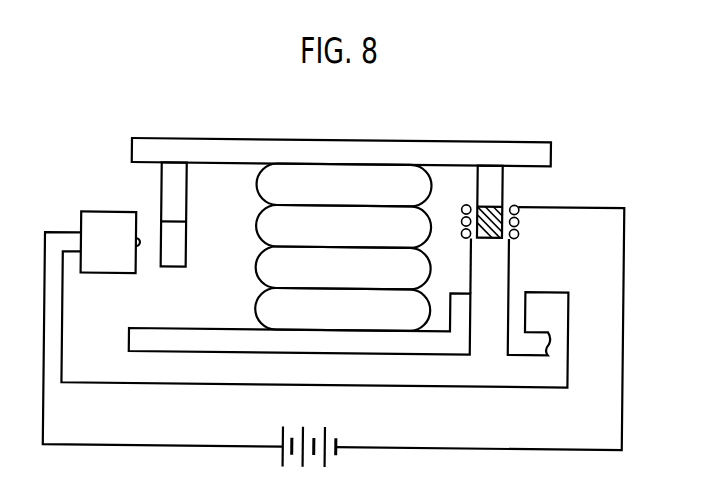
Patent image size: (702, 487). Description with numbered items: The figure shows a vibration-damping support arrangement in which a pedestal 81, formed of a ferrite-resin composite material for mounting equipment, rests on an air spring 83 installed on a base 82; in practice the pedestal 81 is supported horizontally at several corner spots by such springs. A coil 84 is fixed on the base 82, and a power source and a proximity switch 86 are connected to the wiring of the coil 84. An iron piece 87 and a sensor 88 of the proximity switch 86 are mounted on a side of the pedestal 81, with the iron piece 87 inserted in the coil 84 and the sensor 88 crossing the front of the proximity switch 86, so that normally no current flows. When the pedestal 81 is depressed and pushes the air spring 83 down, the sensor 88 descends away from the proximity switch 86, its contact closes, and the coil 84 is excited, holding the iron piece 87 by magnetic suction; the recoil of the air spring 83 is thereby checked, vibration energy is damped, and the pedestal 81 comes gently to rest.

The pedestal 81 is at (224, 138).
The base 82 is at (186, 352).
The air spring 83 is at (259, 265).
The coil 84 is at (518, 236).
The proximity switch 86 is at (101, 211).
The iron piece 87 is at (496, 199).
The sensor 88 is at (179, 240).